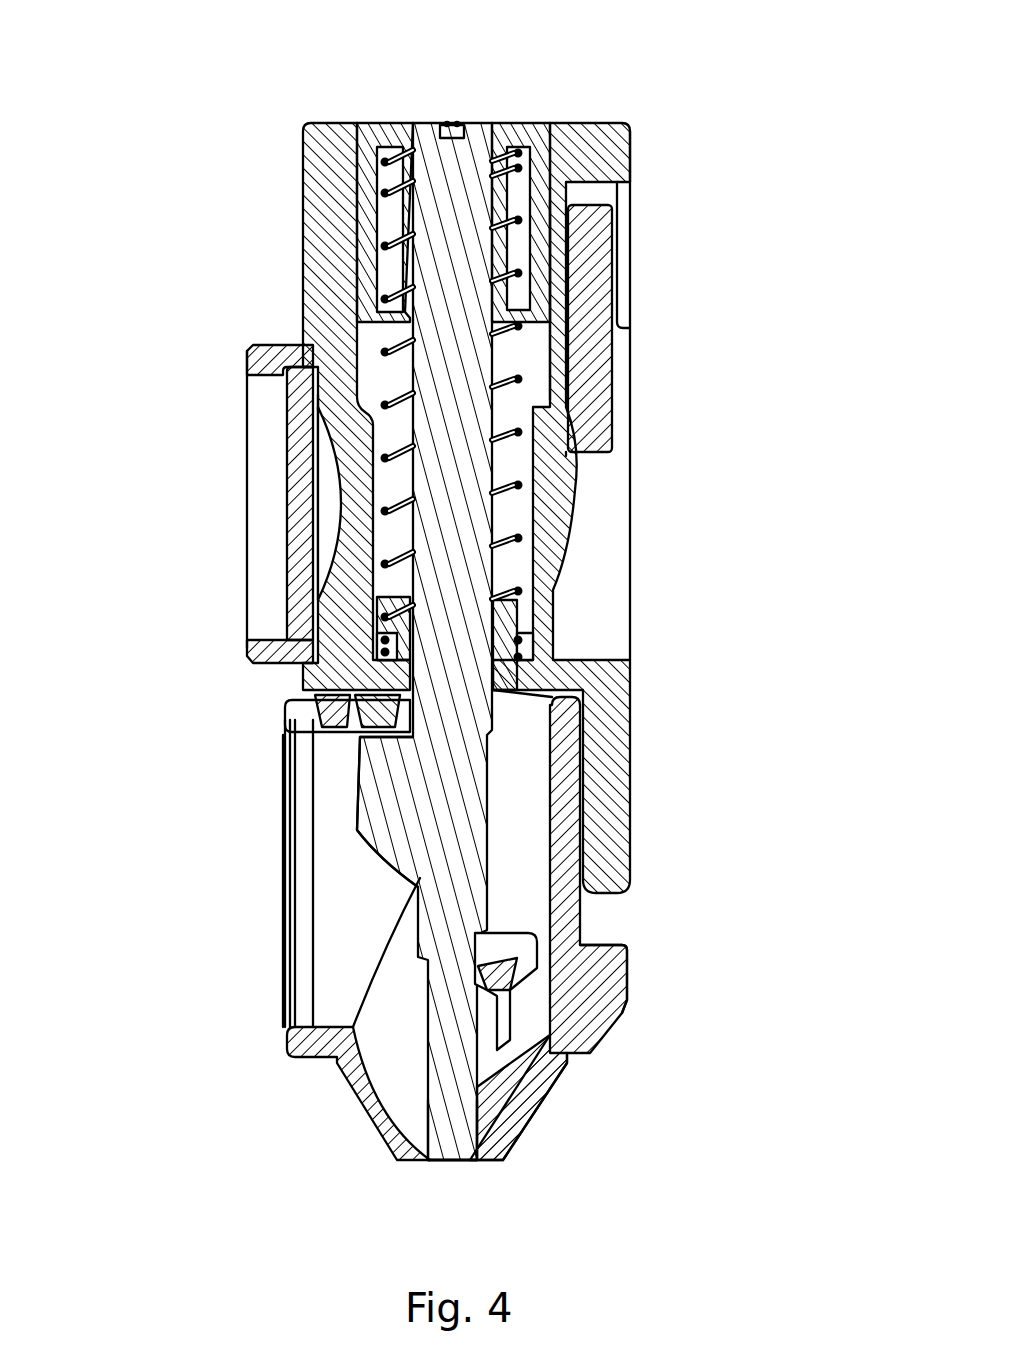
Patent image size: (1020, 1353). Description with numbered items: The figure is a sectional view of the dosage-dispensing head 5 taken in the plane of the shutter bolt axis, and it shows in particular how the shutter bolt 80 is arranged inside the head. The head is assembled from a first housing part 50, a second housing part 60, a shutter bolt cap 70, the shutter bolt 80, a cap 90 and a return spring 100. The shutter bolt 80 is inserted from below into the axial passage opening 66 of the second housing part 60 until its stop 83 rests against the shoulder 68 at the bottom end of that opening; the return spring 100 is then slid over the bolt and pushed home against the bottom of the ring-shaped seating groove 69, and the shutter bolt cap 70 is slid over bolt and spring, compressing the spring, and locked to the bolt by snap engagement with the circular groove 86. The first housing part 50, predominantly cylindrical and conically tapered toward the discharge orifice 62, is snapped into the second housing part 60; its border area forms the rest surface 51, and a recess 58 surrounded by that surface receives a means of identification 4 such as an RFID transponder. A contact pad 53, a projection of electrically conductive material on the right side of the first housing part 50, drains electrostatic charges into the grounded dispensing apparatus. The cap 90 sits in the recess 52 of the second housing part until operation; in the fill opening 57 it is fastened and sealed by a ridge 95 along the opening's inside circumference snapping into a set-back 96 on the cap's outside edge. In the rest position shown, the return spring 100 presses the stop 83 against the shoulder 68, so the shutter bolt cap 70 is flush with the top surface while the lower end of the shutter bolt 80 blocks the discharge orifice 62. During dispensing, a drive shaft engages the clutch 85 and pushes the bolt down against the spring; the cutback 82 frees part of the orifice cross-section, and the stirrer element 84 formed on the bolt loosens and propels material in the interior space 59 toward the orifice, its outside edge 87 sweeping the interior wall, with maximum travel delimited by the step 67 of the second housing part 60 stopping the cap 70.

The means of identification 4 is at (600, 290).
The dosage-dispensing head 5 is at (678, 617).
The first housing part 50 is at (580, 913).
The rest surface 51 is at (632, 150).
The recess 52 is at (325, 520).
The contact pad 53 is at (625, 985).
The fill opening 57 is at (268, 912).
The recess 58 is at (590, 483).
The interior space 59 is at (390, 1068).
The second housing part 60 is at (522, 676).
The discharge orifice 62 is at (455, 1160).
The axial passage opening 66 is at (555, 690).
The step 67 is at (540, 410).
The shoulder 68 is at (302, 717).
The ring-shaped seating groove 69 is at (383, 657).
The shutter bolt cap 70 is at (522, 133).
The shutter bolt 80 is at (455, 865).
The cutback 82 is at (450, 1083).
The stop 83 is at (407, 693).
The stirrer element 84 is at (523, 987).
The clutch 85 is at (457, 123).
The circular groove 86 is at (487, 250).
The outside edge 87 is at (522, 1020).
The cap 90 is at (297, 495).
The ridge 95 is at (287, 1027).
The set-back 96 is at (250, 345).
The return spring 100 is at (341, 416).